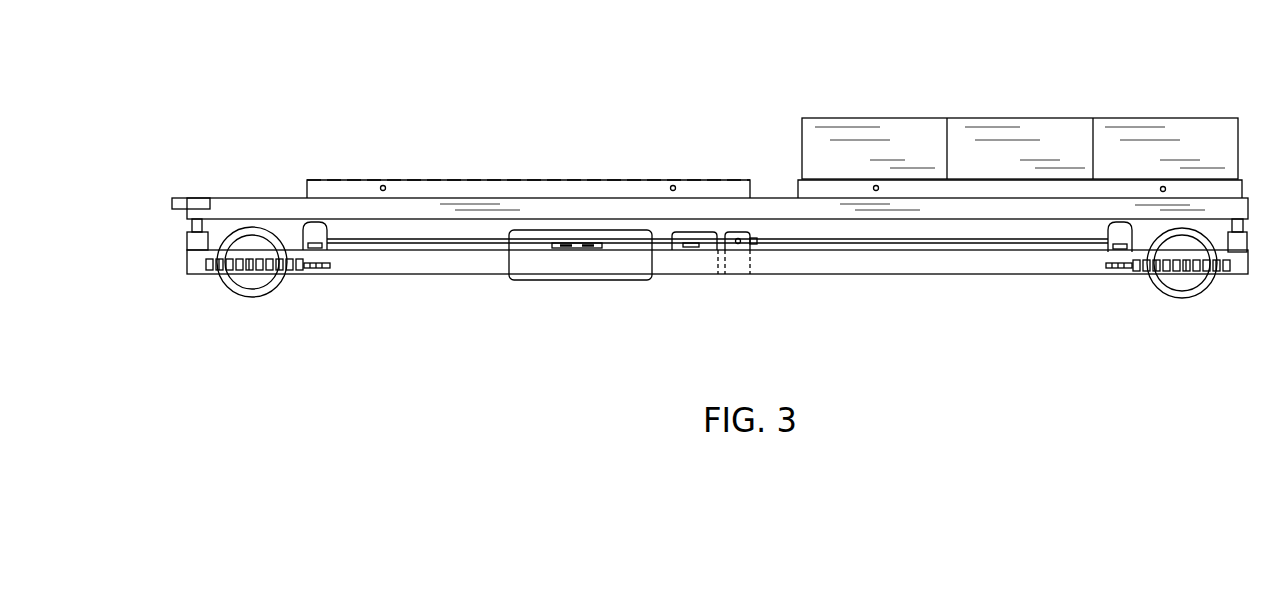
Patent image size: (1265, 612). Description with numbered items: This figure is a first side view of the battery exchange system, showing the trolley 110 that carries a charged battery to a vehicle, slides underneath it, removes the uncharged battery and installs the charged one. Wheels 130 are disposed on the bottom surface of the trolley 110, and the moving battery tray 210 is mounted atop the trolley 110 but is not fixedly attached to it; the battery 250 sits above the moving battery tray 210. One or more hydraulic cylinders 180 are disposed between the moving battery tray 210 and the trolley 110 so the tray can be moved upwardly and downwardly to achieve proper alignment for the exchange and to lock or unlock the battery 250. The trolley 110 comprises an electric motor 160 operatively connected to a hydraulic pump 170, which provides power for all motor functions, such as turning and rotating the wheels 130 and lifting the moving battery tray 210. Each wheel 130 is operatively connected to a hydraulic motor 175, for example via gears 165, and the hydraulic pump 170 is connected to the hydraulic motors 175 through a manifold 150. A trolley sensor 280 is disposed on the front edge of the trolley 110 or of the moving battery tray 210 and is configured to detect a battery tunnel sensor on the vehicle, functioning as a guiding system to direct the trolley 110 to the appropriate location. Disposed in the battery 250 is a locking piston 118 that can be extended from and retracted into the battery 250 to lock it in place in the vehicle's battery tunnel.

The trolley 110 is at (1020, 264).
The locking piston 118 is at (876, 185).
The wheels 130 is at (252, 292).
The manifold 150 is at (747, 248).
The electric motor 160 is at (537, 245).
The gears 165 is at (317, 268).
The hydraulic pump 170 is at (677, 248).
The hydraulic motor 175 is at (313, 230).
The hydraulic cylinder 180 is at (187, 238).
The moving battery tray 210 is at (773, 204).
The battery 250 is at (1003, 135).
The trolley sensor 280 is at (190, 198).